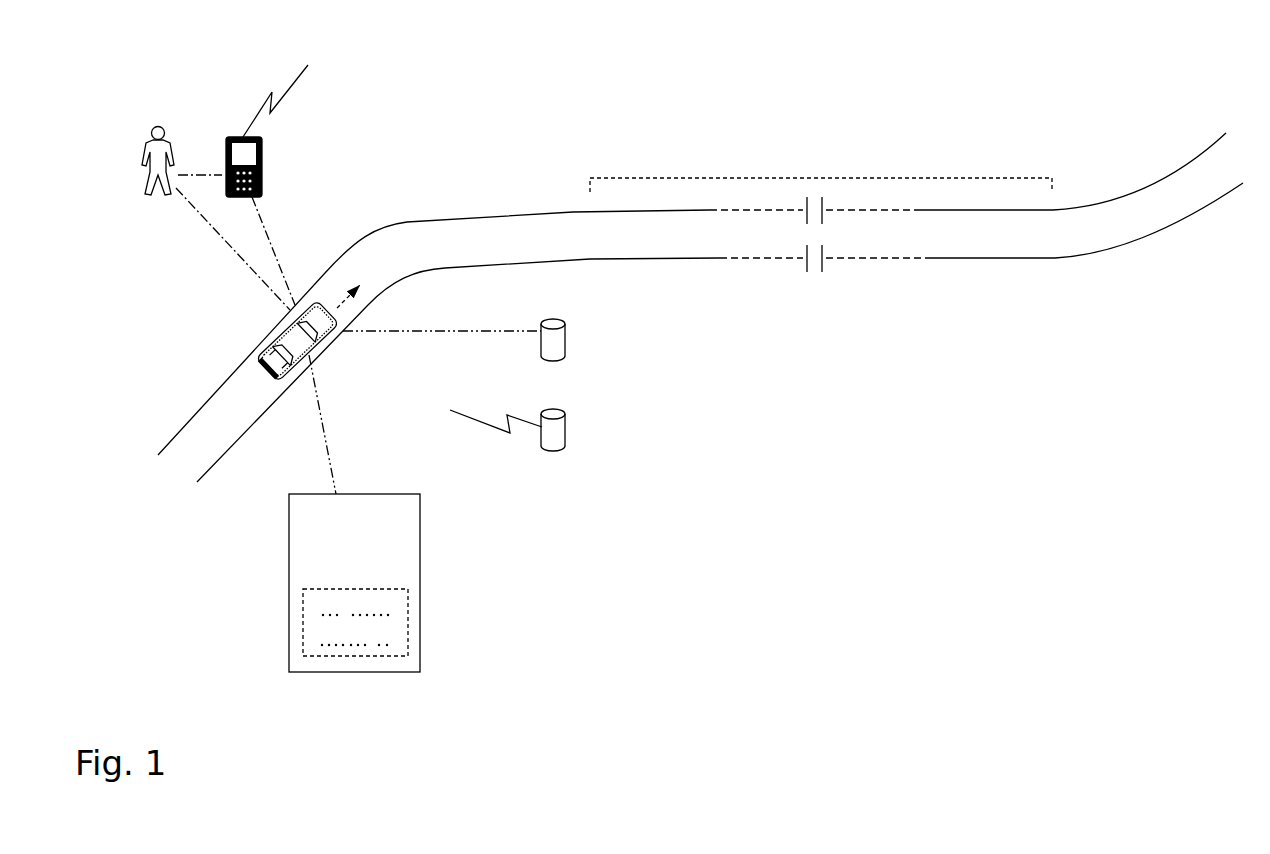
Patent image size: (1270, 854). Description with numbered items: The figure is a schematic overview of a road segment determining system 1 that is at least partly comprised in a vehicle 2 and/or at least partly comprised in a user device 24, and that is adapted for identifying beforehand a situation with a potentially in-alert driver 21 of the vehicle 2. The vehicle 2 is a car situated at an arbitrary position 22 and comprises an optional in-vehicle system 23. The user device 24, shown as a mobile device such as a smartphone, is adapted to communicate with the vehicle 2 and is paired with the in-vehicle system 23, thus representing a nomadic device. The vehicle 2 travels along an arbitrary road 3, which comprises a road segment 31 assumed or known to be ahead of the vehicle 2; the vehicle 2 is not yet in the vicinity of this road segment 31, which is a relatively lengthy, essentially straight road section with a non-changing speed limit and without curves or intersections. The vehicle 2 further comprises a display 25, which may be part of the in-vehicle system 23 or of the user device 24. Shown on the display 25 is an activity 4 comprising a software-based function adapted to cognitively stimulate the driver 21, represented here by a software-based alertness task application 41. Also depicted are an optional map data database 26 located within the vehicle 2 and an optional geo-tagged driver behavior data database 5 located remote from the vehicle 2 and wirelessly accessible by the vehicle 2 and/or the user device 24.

The road segment determining system 1 is at (832, 624).
The vehicle 2 is at (230, 333).
The arbitrary position 22 is at (230, 333).
The in-vehicle system 23 is at (280, 328).
The road 3 is at (190, 408).
The activity 4 is at (398, 622).
The software-based alertness task application 41 is at (380, 628).
The geo-tagged driver behavior data database 5 is at (566, 435).
The driver 21 is at (152, 118).
The user device 24 is at (265, 155).
The display 25 is at (332, 583).
The map data database 26 is at (566, 344).
The road segment 31 is at (820, 178).